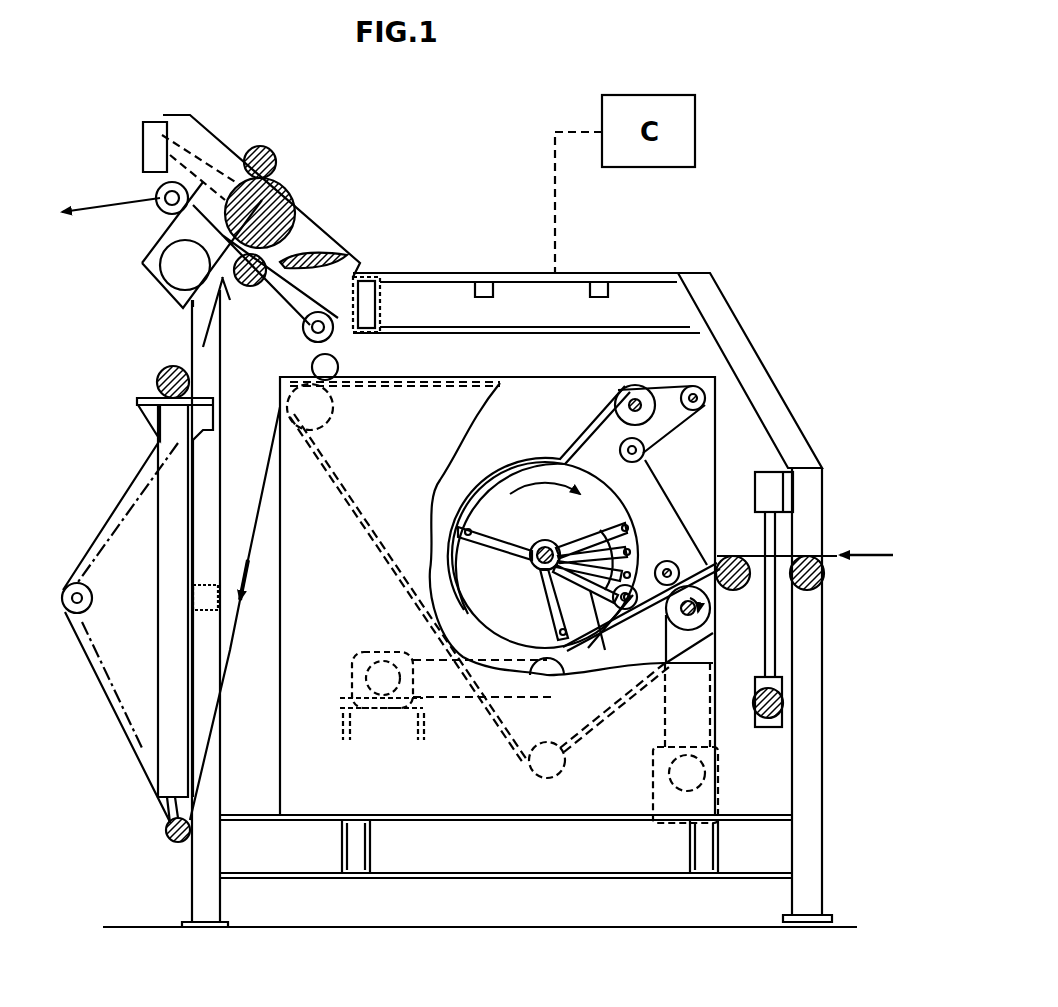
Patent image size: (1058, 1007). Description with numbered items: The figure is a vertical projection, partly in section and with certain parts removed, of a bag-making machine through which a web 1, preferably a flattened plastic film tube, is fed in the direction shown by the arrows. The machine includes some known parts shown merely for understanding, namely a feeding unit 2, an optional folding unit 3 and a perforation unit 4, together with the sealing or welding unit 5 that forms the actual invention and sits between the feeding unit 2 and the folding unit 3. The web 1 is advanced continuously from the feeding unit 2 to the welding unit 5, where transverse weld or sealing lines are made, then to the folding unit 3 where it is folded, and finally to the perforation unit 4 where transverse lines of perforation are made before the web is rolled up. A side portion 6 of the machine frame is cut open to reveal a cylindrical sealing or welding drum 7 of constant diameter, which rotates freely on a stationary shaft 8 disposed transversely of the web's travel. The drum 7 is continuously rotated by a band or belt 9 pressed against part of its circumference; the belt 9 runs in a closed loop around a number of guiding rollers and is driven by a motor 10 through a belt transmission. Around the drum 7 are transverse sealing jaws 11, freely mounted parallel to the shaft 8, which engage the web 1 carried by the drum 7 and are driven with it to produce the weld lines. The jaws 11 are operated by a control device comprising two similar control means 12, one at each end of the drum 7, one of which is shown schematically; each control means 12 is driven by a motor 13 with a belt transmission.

The web 1 is at (138, 200).
The feeding unit 2 is at (755, 718).
The folding unit 3 is at (114, 683).
The perforation unit 4 is at (312, 250).
The sealing or welding unit 5 is at (282, 772).
The side portion of the frame 6 is at (404, 452).
The sealing or welding drum 7 is at (626, 484).
The stationary shaft 8 is at (548, 545).
The band or belt 9 is at (578, 383).
The motor 10 is at (655, 792).
The transverse sealing jaws 11 is at (640, 530).
The operating or control means 12 is at (628, 618).
The motor 13 is at (358, 668).